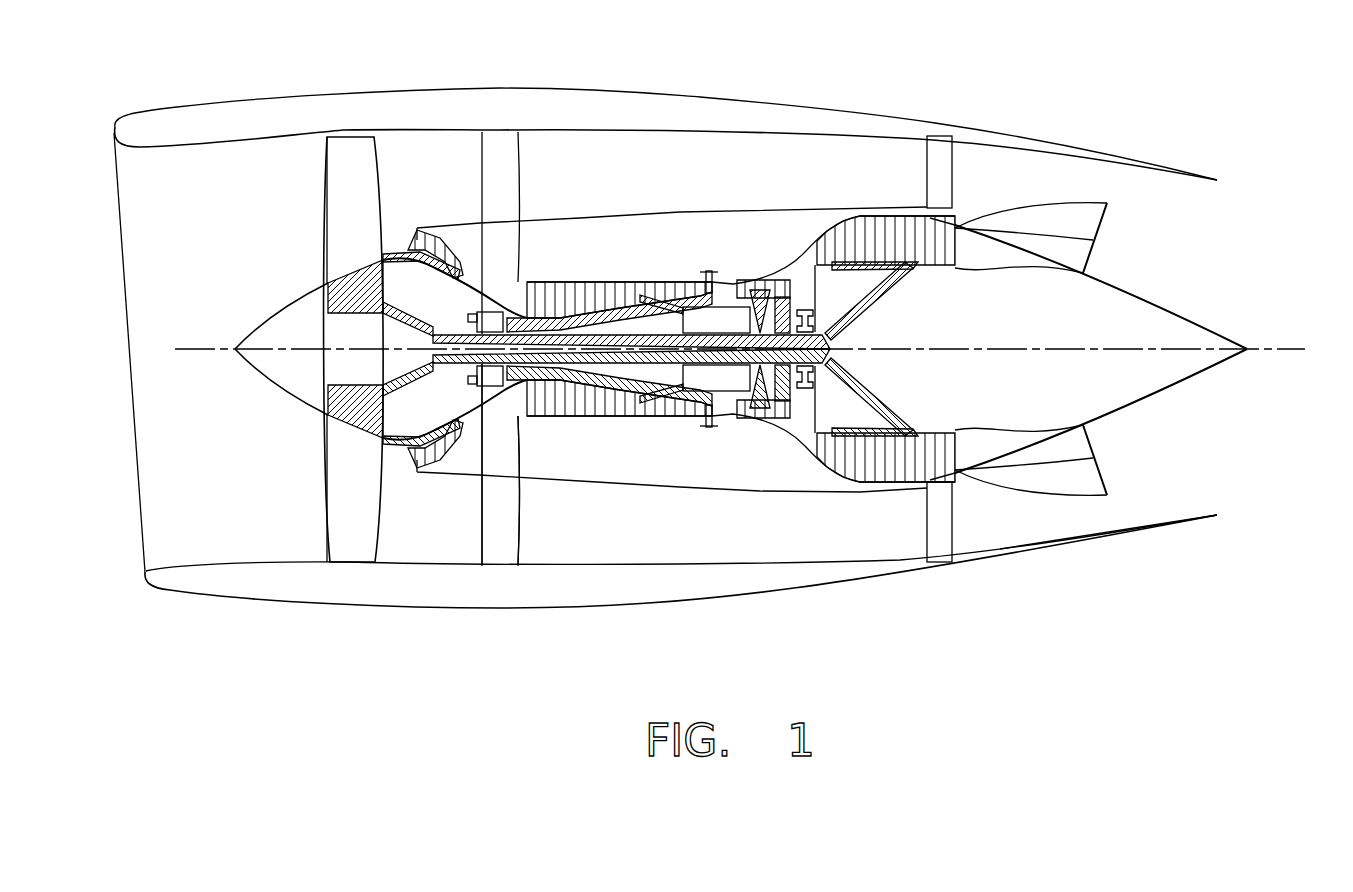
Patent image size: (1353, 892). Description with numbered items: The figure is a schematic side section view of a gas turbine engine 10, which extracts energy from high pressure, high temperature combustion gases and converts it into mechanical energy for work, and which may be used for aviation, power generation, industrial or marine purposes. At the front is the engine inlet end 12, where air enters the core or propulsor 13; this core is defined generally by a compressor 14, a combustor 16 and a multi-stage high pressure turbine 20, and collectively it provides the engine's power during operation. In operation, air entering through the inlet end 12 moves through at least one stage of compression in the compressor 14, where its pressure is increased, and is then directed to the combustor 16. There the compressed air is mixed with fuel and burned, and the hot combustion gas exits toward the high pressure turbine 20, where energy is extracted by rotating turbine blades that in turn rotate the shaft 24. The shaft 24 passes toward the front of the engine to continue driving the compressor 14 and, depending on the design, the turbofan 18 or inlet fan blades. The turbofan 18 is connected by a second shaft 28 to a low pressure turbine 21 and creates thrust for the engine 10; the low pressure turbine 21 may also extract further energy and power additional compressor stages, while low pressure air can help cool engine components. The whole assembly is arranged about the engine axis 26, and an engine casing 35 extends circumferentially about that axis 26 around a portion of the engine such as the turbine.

The gas turbine engine 10 is at (970, 66).
The engine inlet end 12 is at (128, 184).
The propulsor 13 is at (672, 200).
The compressor 14 is at (565, 275).
The combustor 16 is at (728, 268).
The turbofan 18 is at (298, 208).
The high pressure turbine 20 is at (779, 258).
The low pressure turbine 21 is at (904, 285).
The shaft 24 is at (697, 424).
The engine axis 26 is at (1305, 349).
The shaft 28 is at (607, 422).
The engine casing 35 is at (790, 455).